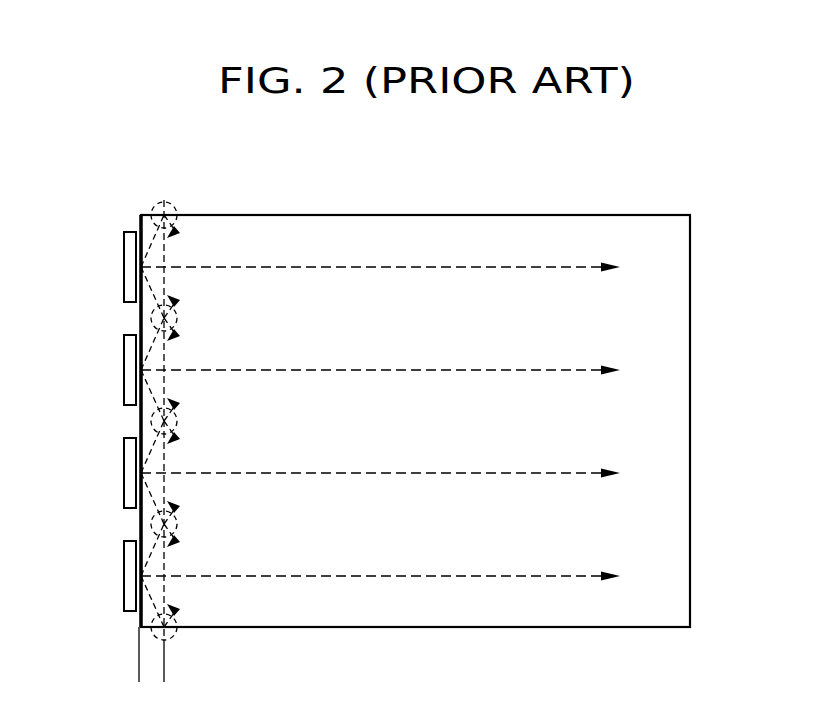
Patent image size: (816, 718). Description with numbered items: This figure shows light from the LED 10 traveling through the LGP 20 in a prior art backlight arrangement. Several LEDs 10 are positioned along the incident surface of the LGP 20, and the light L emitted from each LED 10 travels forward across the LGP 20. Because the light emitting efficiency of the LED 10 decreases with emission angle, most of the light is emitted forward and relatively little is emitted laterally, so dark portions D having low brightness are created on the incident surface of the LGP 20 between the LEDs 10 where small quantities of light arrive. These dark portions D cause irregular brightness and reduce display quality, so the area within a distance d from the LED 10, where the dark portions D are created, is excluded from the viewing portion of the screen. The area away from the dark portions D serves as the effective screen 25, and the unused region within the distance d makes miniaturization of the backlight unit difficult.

The LED 10 is at (124, 267).
The LGP 20 is at (690, 315).
The effective screen 25 is at (171, 408).
The dark portions D is at (160, 421).
The light L is at (380, 422).
The distance d is at (151, 654).